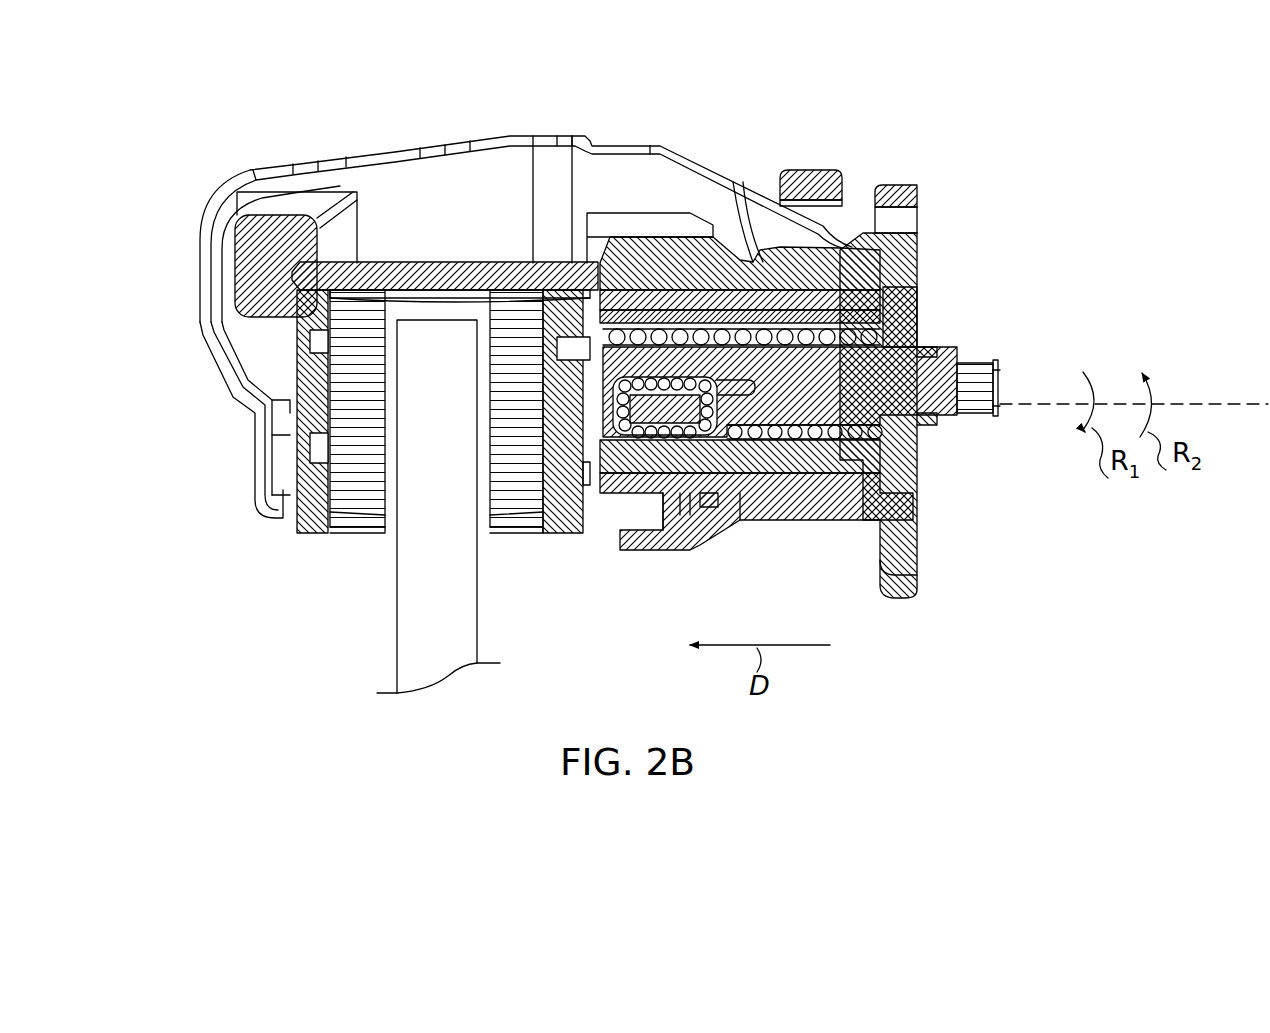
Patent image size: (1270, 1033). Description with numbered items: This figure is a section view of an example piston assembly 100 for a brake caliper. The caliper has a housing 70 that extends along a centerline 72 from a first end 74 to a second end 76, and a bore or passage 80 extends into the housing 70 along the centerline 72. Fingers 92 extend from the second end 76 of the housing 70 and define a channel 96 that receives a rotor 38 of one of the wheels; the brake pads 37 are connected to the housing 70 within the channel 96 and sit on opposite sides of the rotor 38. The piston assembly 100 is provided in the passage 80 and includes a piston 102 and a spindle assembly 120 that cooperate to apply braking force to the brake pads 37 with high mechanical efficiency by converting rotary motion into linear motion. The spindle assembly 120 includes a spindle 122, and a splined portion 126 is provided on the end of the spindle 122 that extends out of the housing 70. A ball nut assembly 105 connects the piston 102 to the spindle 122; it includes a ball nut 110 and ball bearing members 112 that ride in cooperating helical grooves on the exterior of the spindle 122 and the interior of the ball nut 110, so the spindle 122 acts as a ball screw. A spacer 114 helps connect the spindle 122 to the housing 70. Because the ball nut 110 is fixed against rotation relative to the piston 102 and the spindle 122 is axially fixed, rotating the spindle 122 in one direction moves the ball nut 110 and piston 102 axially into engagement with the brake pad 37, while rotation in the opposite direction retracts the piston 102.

The brake pads 37 is at (353, 510).
The rotor 38 is at (420, 654).
The housing 70 is at (478, 176).
The centerline 72 is at (1134, 375).
The first end 74 is at (876, 188).
The second end 76 is at (203, 178).
The bore or passage 80 is at (885, 478).
The fingers 92 is at (236, 405).
The channel 96 is at (407, 312).
The piston assembly 100 is at (766, 268).
The piston 102 is at (905, 266).
The ball nut assembly 105 is at (895, 324).
The ball nut 110 is at (813, 438).
The ball bearing members 112 is at (708, 438).
The spacer 114 is at (917, 447).
The spindle assembly 120 is at (1019, 368).
The spindle 122 is at (880, 372).
The splined portion 126 is at (1000, 384).